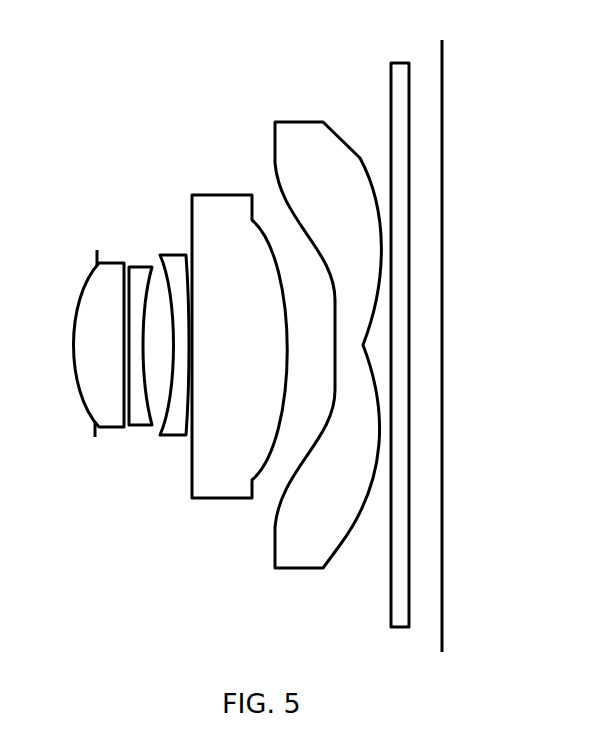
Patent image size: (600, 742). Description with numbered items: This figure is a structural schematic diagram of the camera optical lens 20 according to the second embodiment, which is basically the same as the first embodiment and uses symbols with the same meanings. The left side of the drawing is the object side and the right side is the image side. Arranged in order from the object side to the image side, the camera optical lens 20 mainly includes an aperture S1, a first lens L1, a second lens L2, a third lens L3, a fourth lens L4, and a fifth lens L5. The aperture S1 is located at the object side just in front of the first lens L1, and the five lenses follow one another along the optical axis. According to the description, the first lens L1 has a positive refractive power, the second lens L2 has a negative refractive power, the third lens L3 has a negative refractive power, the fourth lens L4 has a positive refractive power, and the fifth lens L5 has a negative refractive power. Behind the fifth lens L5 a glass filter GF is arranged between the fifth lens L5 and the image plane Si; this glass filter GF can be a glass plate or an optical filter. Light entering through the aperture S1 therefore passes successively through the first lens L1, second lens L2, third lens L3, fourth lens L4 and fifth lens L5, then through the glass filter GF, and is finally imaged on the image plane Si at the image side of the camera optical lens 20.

The camera optical lens 20 is at (272, 32).
The aperture S1 is at (92, 250).
The first lens L1 is at (100, 334).
The second lens L2 is at (141, 333).
The third lens L3 is at (174, 333).
The fourth lens L4 is at (239, 333).
The fifth lens L5 is at (328, 331).
The glass filter GF is at (400, 333).
The image plane Si is at (440, 333).